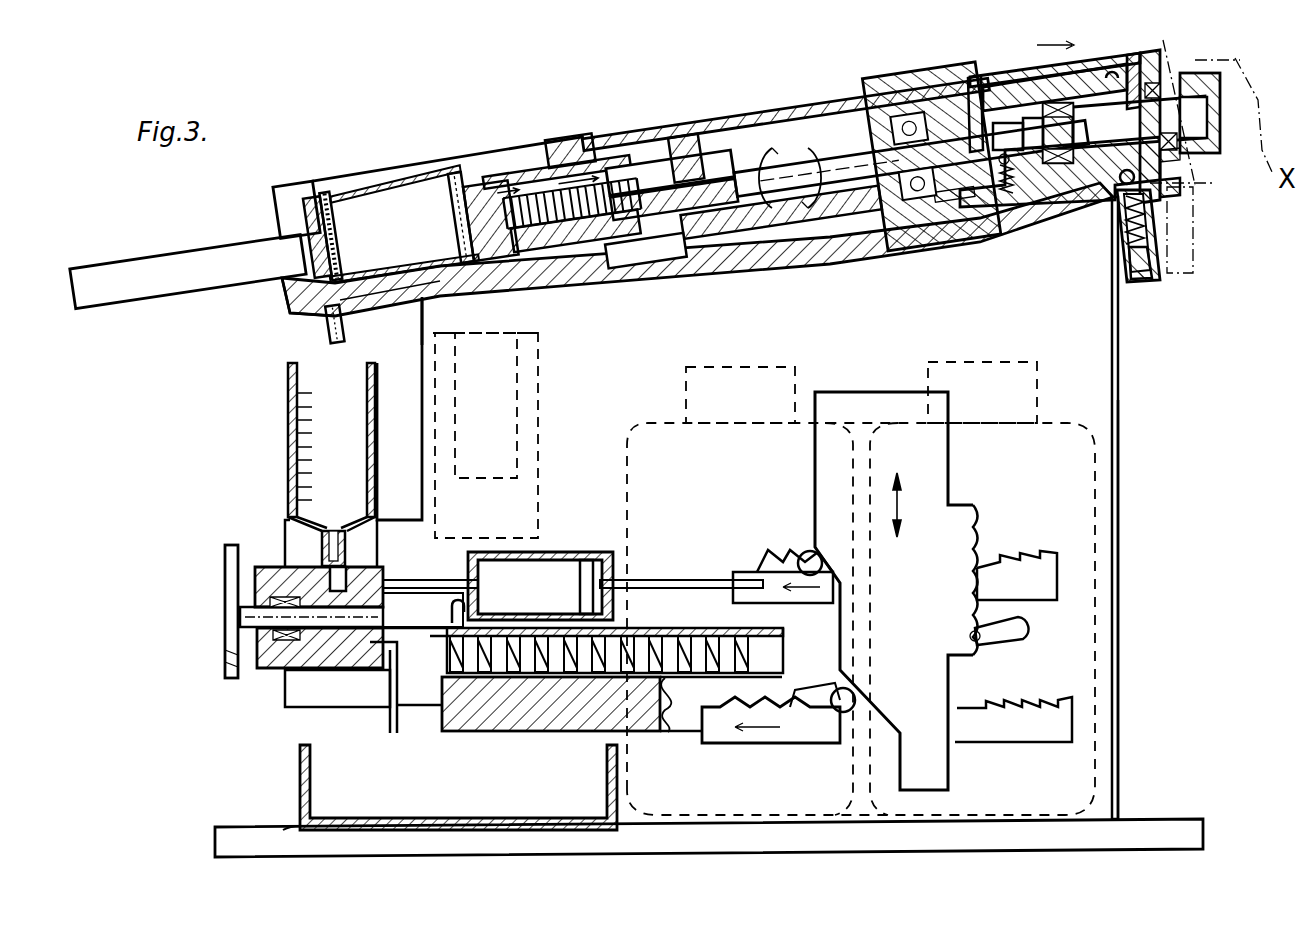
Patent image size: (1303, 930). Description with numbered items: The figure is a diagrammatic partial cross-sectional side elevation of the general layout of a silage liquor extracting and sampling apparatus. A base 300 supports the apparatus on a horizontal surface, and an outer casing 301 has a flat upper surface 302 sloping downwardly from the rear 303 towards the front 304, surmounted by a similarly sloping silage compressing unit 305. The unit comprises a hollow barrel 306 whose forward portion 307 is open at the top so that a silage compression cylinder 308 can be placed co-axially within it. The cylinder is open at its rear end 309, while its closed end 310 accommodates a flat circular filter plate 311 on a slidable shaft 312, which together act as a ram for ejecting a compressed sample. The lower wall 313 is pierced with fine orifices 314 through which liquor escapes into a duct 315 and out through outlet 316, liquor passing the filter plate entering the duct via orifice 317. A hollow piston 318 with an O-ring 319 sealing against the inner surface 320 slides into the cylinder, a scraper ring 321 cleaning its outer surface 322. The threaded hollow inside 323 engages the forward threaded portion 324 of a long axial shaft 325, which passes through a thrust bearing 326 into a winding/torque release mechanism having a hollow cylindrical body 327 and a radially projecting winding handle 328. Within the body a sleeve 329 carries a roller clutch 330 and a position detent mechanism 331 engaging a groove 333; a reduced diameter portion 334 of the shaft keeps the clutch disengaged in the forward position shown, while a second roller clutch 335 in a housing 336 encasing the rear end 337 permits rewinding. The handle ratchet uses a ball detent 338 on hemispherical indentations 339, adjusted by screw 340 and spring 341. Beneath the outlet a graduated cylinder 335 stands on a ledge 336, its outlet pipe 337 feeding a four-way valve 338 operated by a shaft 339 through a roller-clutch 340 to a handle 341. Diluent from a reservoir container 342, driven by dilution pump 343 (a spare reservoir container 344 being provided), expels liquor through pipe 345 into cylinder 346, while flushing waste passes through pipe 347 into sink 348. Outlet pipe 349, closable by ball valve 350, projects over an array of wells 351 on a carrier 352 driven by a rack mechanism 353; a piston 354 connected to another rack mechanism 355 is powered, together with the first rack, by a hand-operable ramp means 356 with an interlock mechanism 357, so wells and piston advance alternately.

The base 300 is at (1158, 822).
The outer casing 301 is at (1118, 688).
The flat upper surface 302 is at (838, 262).
The rear 303 is at (1115, 200).
The front 304 is at (412, 308).
The silage compressing unit 305 is at (680, 120).
The hollow barrel 306 is at (562, 140).
The forward portion 307 is at (398, 185).
The silage compression cylinder 308 is at (448, 195).
The rear end 309 is at (540, 175).
The closed end 310 is at (295, 195).
The filter plate 311 is at (340, 225).
The slidable shaft 312 is at (178, 258).
The lower wall 313 is at (445, 265).
The fine orifices 314 is at (365, 275).
The duct 315 is at (428, 330).
The outlet 316 is at (320, 330).
The orifice 317 is at (290, 300).
The hollow piston 318 is at (455, 210).
The O-ring 319 is at (485, 329).
The inner surface 320 is at (388, 200).
The scraper ring 321 is at (583, 247).
The outer surface 322 is at (577, 253).
The hollow inside 323 is at (547, 217).
The forward threaded portion 324 is at (828, 160).
The axial shaft 325 is at (865, 175).
The thrust bearing 326 is at (905, 120).
The hollow cylindrical body 327 is at (1170, 190).
The winding handle 328 is at (1170, 262).
The sleeve 329 is at (985, 80).
The roller clutch 330 is at (1030, 75).
The position detent mechanism 331 is at (1020, 180).
The groove 333 is at (1004, 200).
The reduced diameter portion 334 is at (1055, 170).
The second roller clutch / graduated cylinder 335 is at (1135, 60).
The housing / ledge 336 is at (1225, 90).
The rear end / outlet pipe 337 is at (1230, 105).
The ball detent / four-way valve 338 is at (1120, 182).
The hemispherical indentations / shaft 339 is at (1109, 72).
The screw / roller-clutch 340 is at (1133, 232).
The spring / handle 341 is at (1148, 280).
The reservoir container 342 is at (650, 440).
The dilution pump 343 is at (500, 412).
The spare reservoir container 344 is at (1053, 457).
The pipe 345 is at (412, 578).
The cylinder 346 is at (555, 548).
The pipe 347 is at (390, 715).
The sink 348 is at (318, 786).
The outlet pipe 349 is at (445, 605).
The ball valve 350 is at (470, 590).
The array of wells 351 is at (663, 643).
The carrier 352 is at (660, 707).
The rack mechanism 353 is at (817, 732).
The piston 354 is at (585, 580).
The rack mechanism 355 is at (760, 560).
The ramp means 356 is at (860, 392).
The interlock mechanism 357 is at (978, 642).